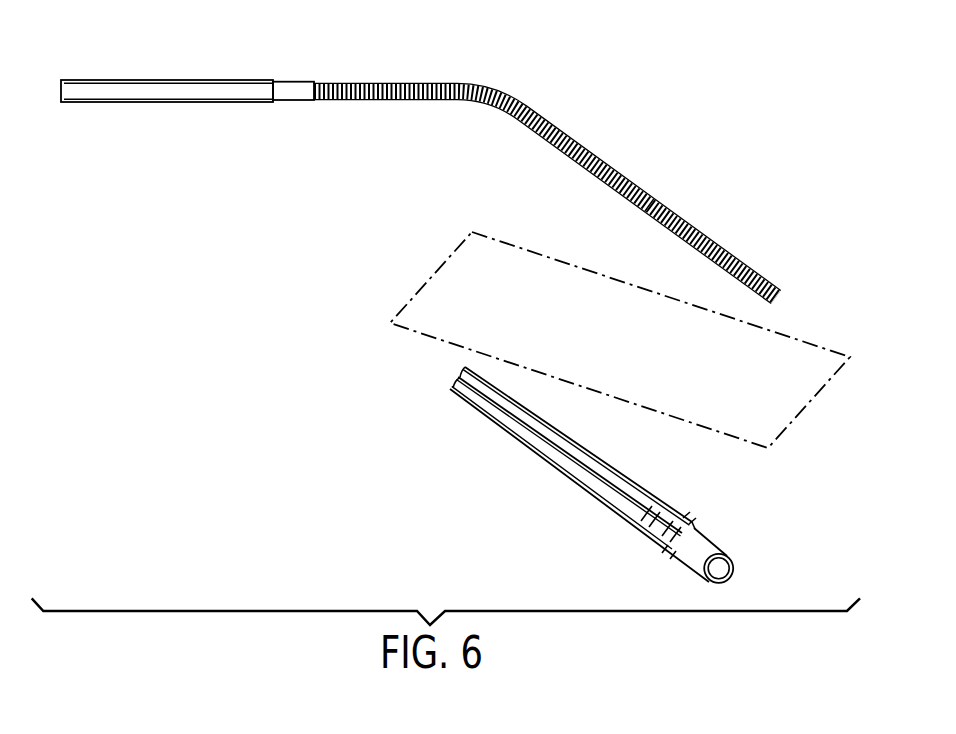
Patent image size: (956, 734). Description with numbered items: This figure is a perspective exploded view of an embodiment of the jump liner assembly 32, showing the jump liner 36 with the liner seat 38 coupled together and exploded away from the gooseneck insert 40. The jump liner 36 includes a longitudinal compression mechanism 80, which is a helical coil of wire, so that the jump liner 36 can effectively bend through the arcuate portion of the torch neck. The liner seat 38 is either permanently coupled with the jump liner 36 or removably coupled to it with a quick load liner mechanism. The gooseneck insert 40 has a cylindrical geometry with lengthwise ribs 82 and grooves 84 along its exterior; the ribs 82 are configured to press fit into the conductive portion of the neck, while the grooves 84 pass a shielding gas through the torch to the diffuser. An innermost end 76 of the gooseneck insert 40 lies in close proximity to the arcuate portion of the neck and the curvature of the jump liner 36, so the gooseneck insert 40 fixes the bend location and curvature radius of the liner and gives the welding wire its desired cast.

The jump liner assembly 32 is at (418, 160).
The jump liner 36 is at (545, 195).
The liner seat 38 is at (191, 100).
The longitudinal compression mechanism 80 is at (659, 202).
The gooseneck insert 40 is at (591, 443).
The innermost end 76 is at (467, 366).
The grooves 84 is at (573, 468).
The ribs 82 is at (628, 503).